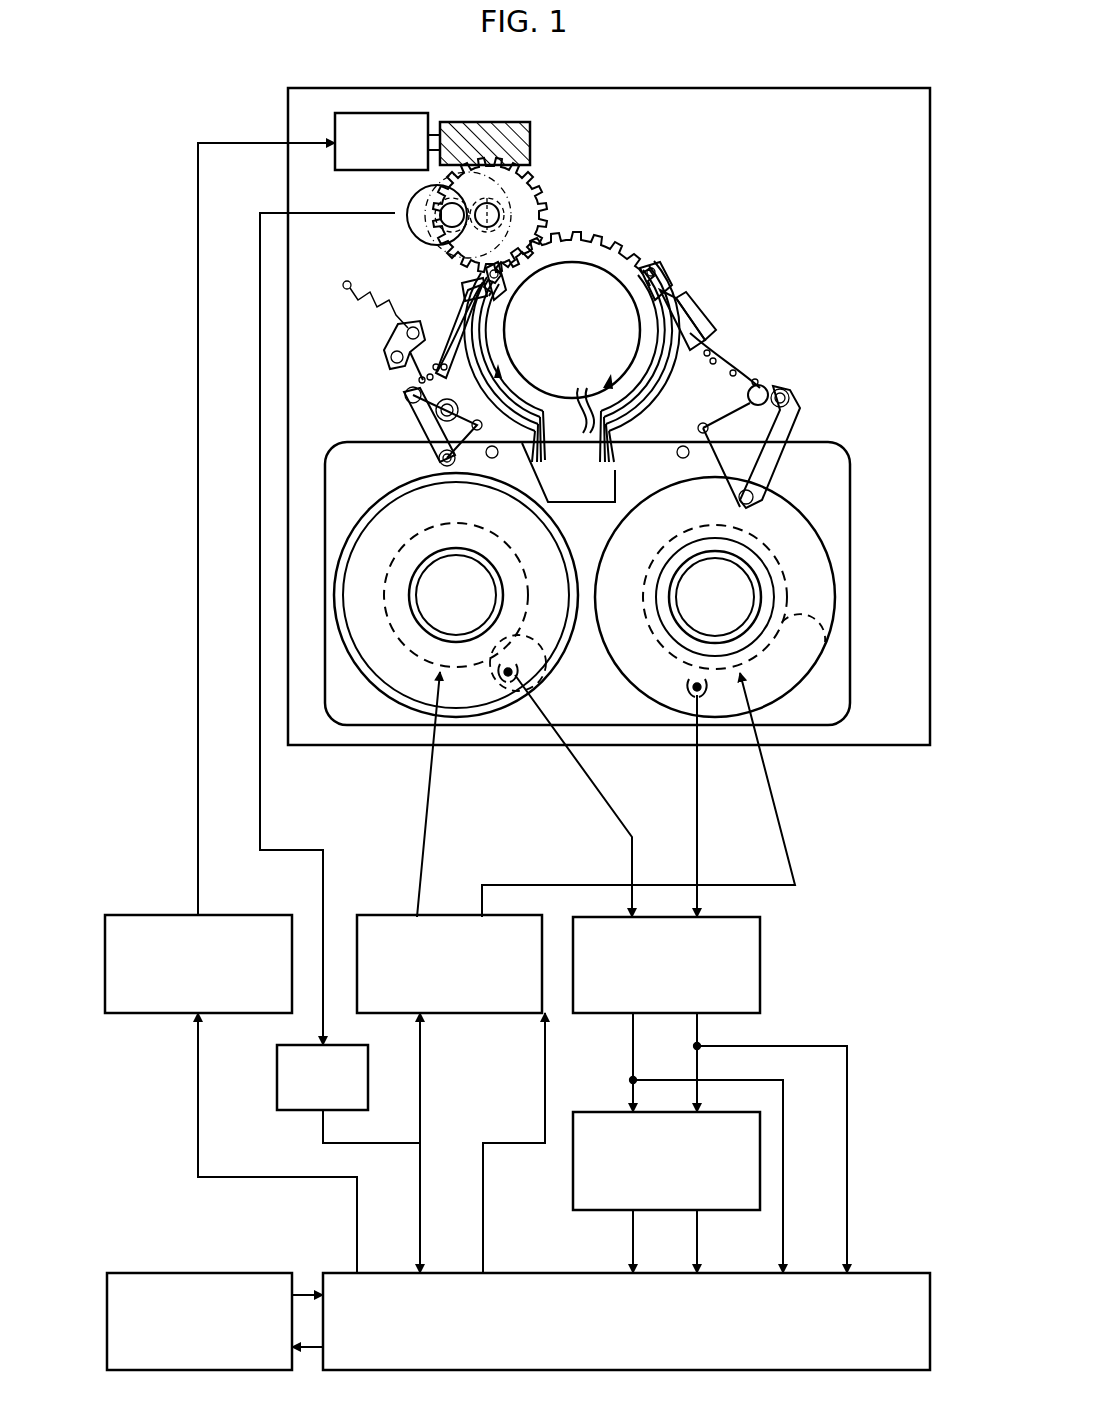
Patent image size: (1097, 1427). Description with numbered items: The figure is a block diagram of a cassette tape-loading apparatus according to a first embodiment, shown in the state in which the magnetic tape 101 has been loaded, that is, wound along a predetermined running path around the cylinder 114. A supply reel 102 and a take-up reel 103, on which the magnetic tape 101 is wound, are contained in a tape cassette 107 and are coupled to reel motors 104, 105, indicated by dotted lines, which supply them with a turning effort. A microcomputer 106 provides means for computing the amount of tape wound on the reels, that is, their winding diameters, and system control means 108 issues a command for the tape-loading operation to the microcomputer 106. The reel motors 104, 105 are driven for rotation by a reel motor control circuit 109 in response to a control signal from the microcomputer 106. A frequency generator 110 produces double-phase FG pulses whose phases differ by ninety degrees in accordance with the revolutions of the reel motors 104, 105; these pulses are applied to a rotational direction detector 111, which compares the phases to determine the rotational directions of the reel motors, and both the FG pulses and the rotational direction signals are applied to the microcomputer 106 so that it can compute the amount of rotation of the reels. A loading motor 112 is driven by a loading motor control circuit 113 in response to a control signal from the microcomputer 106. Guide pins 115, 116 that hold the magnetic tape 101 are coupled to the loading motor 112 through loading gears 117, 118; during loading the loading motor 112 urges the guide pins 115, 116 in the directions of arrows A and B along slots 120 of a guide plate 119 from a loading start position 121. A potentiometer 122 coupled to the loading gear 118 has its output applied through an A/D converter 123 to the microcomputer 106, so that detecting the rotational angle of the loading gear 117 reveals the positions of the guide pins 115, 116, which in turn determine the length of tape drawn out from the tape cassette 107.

The magnetic tape 101 is at (423, 470).
The supply reel 102 is at (378, 552).
The take-up reel 103 is at (805, 545).
The reel motor 104 is at (540, 665).
The reel motor 105 is at (830, 643).
The microcomputer 106 is at (338, 1273).
The tape cassette 107 is at (820, 457).
The system control means 108 is at (153, 1273).
The reel motor control circuit 109 is at (380, 915).
The frequency generator 110 is at (762, 943).
The rotational direction detector 111 is at (588, 1112).
The loading motor 112 is at (362, 113).
The loading motor control circuit 113 is at (140, 915).
The cylinder 114 is at (600, 290).
The guide pin 115 is at (470, 275).
The guide pin 116 is at (660, 282).
The loading gear 117 is at (575, 262).
The loading gear 118 is at (545, 205).
The guide plate 119 is at (653, 395).
The slots 120 is at (579, 396).
The loading start position 121 is at (568, 472).
The potentiometer 122 is at (415, 218).
The A/D converter 123 is at (277, 1072).